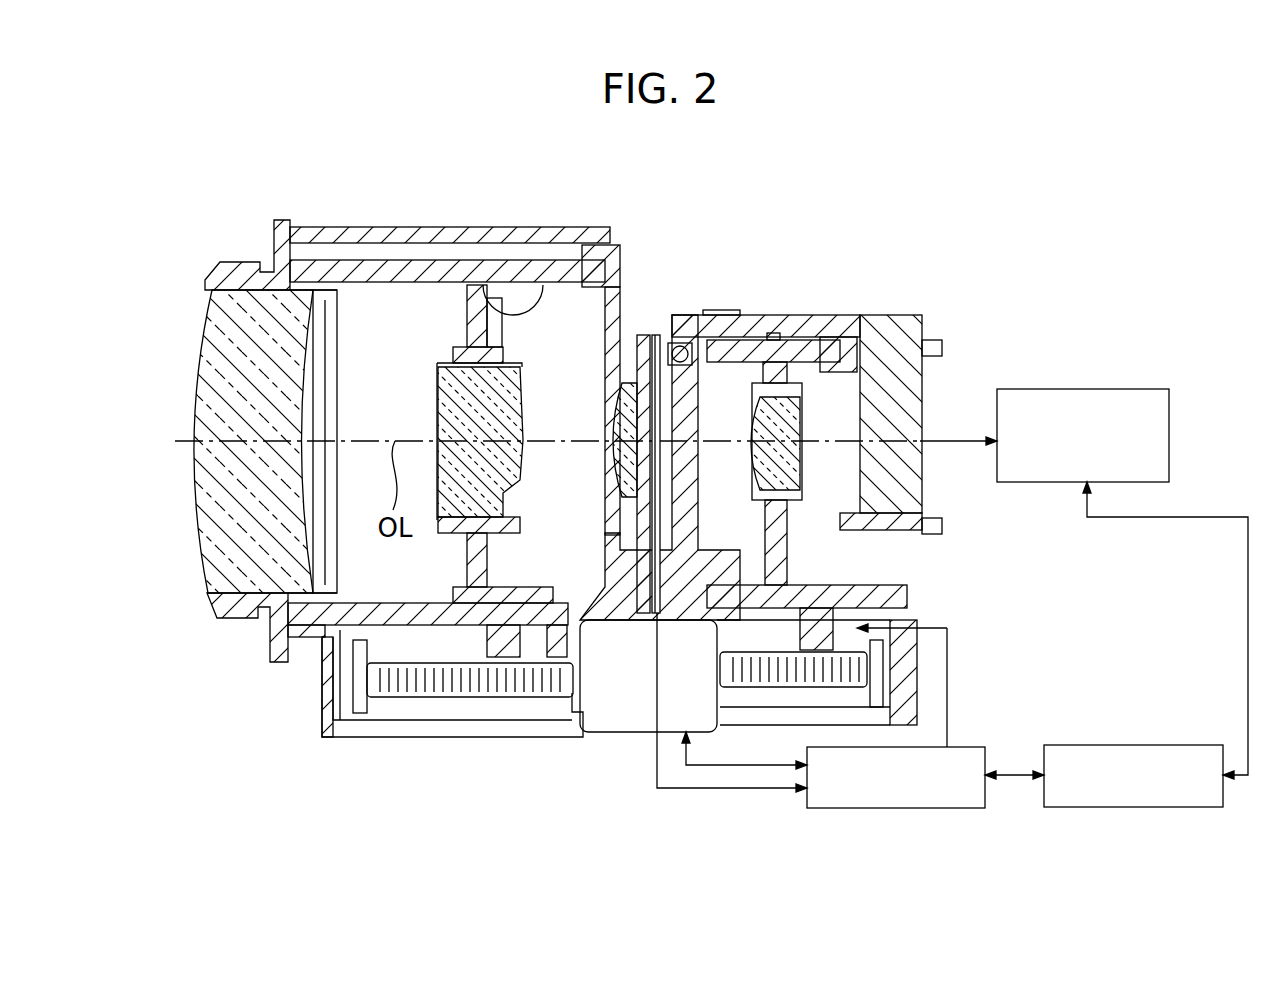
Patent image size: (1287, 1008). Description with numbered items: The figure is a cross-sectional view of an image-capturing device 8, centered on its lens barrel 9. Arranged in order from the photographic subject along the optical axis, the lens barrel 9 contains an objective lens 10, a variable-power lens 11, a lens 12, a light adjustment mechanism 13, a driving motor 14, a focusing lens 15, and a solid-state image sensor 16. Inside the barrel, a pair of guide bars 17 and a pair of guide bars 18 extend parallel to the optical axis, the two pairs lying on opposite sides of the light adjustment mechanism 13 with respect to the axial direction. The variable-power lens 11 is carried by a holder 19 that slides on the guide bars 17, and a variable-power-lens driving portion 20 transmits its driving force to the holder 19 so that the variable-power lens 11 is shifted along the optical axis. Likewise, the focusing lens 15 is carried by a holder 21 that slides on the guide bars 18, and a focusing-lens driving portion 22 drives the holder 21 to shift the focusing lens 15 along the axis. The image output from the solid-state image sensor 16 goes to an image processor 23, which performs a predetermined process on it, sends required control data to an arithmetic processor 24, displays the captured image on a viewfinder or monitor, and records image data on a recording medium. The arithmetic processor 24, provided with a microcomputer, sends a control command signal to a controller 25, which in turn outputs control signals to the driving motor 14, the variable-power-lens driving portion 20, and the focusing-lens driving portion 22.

The image-capturing device 8 is at (1066, 152).
The lens barrel 9 is at (479, 230).
The objective lens 10 is at (197, 534).
The variable-power lens 11 is at (445, 403).
The lens 12 is at (613, 413).
The light adjustment mechanism 13 is at (650, 345).
The driving motor 14 is at (740, 345).
The focusing lens 15 is at (863, 378).
The solid-state image sensor 16 is at (922, 393).
The guide bars 17 is at (381, 262).
The guide bars 18 is at (806, 345).
The holder 19 is at (548, 312).
The variable-power-lens driving portion 20 is at (623, 723).
The holder 21 is at (795, 352).
The focusing-lens driving portion 22 is at (847, 667).
The image processor 23 is at (1066, 389).
The arithmetic processor 24 is at (1100, 780).
The controller 25 is at (888, 810).